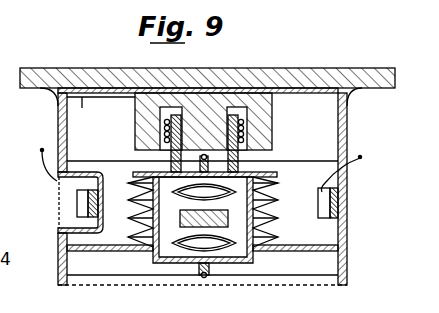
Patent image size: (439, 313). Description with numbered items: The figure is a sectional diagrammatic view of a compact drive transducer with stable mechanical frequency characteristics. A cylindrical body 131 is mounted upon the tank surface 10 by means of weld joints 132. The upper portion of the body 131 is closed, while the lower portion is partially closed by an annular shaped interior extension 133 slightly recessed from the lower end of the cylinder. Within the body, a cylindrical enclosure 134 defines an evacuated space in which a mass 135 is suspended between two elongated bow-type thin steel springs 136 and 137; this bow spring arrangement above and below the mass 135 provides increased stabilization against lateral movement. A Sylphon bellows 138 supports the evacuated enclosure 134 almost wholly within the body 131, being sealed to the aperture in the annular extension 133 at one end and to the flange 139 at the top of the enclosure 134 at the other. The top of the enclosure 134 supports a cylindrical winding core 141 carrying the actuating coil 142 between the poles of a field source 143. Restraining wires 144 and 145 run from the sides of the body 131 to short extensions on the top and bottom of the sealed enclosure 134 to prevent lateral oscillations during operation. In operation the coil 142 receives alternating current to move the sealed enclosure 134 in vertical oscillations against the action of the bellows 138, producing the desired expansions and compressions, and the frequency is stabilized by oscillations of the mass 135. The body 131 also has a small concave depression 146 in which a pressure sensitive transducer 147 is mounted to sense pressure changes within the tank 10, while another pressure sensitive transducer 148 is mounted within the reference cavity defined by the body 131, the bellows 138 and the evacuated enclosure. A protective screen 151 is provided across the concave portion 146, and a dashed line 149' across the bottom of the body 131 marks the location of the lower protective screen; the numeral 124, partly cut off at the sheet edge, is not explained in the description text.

The tank surface 10 is at (370, 67).
The weld joints 132 is at (350, 97).
The cylindrical body 131 is at (357, 134).
The protective screen 151 is at (54, 181).
The concave depression 146 is at (78, 228).
The pressure sensitive transducer 147 is at (77, 200).
The pressure sensitive transducer 148 is at (323, 218).
The field source 143 is at (208, 106).
The actuating coil 142 is at (162, 127).
The cylindrical winding core 141 is at (243, 124).
The restraining wire 144 is at (292, 160).
The flange 139 is at (272, 175).
The cylindrical enclosure 134 is at (232, 265).
The bow spring 136 is at (190, 193).
The mass 135 is at (204, 218).
The bow spring 137 is at (190, 243).
The Sylphon bellows 138 is at (284, 205).
The annular shaped interior extension 133 is at (285, 247).
The restraining wire 145 is at (282, 275).
The base plane 149' is at (202, 296).
The partial numeral 124 is at (14, 284).